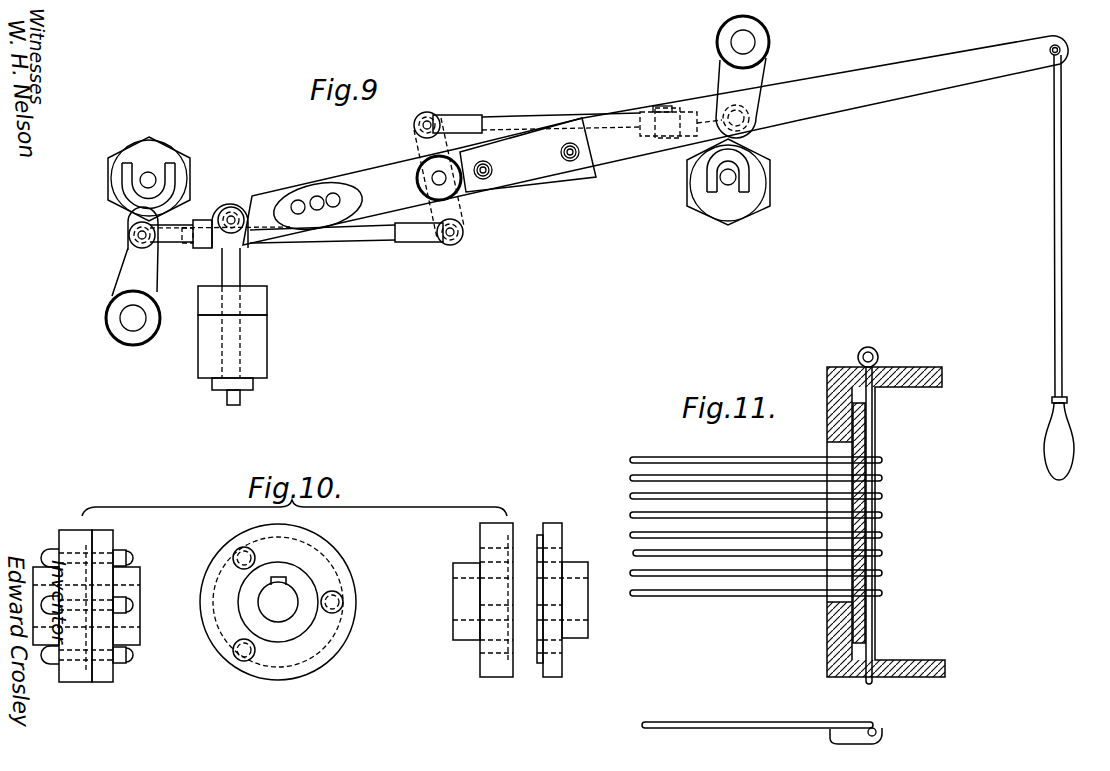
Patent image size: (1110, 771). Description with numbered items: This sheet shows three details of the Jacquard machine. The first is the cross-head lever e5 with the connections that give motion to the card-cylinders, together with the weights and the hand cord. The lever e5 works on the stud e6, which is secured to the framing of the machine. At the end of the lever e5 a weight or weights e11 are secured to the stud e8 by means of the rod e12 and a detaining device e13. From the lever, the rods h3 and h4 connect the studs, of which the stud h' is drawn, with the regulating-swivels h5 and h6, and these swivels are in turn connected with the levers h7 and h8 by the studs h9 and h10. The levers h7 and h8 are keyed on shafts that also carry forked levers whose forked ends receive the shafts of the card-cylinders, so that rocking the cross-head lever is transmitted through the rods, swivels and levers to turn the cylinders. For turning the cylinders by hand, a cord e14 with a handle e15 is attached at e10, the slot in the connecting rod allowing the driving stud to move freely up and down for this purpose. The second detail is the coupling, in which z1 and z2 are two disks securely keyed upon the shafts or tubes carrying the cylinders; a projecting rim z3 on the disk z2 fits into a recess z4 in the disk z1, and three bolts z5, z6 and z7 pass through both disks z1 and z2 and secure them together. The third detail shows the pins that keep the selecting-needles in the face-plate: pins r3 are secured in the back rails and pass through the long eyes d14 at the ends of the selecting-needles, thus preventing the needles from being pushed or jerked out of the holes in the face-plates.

In FIG. 9, the cross-headed lever e5 is at (372, 172).
In FIG. 9, the stud e6 is at (436, 179).
In FIG. 9, the stud e8 is at (233, 210).
In FIG. 9, the attachment point of cord e10 is at (1071, 43).
In FIG. 9, the weight e11 is at (232, 332).
In FIG. 9, the rod e12 is at (245, 313).
In FIG. 9, the detaining device e13 is at (247, 390).
In FIG. 9, the cord e14 is at (1072, 226).
In FIG. 9, the handle e15 is at (1073, 438).
In FIG. 9, the stud h' is at (439, 163).
In FIG. 9, the rod h3 is at (362, 233).
In FIG. 9, the rod h4 is at (508, 113).
In FIG. 9, the regulating-swivel h5 is at (197, 250).
In FIG. 9, the regulating-swivel h6 is at (662, 108).
In FIG. 9, the lever h7 is at (130, 258).
In FIG. 9, the lever h8 is at (752, 70).
In FIG. 9, the stud h9 is at (746, 128).
In FIG. 9, the stud h10 is at (132, 233).
In FIG. 10, the disk z1 is at (483, 600).
In FIG. 10, the disk z2 is at (565, 600).
In FIG. 10, the projecting rim z3 is at (540, 540).
In FIG. 10, the recess z4 is at (512, 662).
In FIG. 10, the bolt z5 is at (48, 557).
In FIG. 10, the bolt z6 is at (48, 605).
In FIG. 10, the bolt z7 is at (48, 655).
In FIG. 11, the pin r3 is at (872, 728).
In FIG. 11, the long eye d14 is at (882, 732).